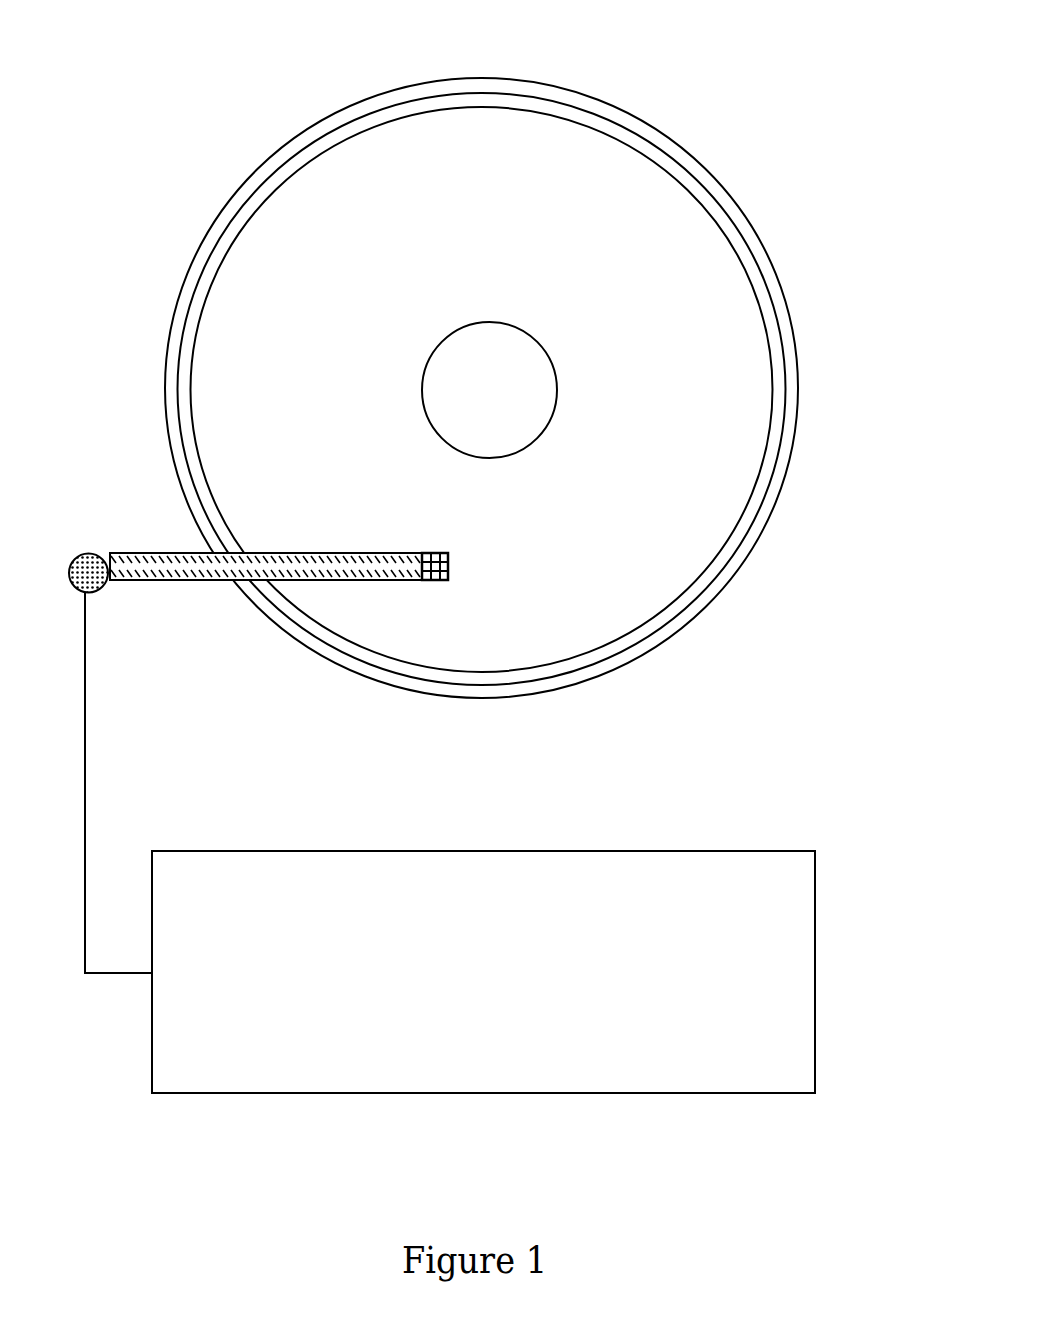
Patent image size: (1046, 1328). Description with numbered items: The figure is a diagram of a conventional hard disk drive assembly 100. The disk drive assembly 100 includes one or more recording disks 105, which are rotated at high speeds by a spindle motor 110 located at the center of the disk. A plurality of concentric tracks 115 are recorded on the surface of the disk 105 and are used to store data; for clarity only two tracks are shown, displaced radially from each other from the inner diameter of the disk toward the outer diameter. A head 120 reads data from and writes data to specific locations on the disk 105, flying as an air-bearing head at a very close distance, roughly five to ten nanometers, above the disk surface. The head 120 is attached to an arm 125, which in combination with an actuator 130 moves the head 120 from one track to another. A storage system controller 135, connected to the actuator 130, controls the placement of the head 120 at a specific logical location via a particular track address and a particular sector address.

The disk drive assembly 100 is at (162, 105).
The recording disk 105 is at (650, 117).
The spindle motor 110 is at (543, 347).
The concentric tracks 115 is at (745, 238).
The head 120 is at (450, 558).
The arm 125 is at (303, 552).
The actuator 130 is at (98, 592).
The storage system controller 135 is at (827, 943).